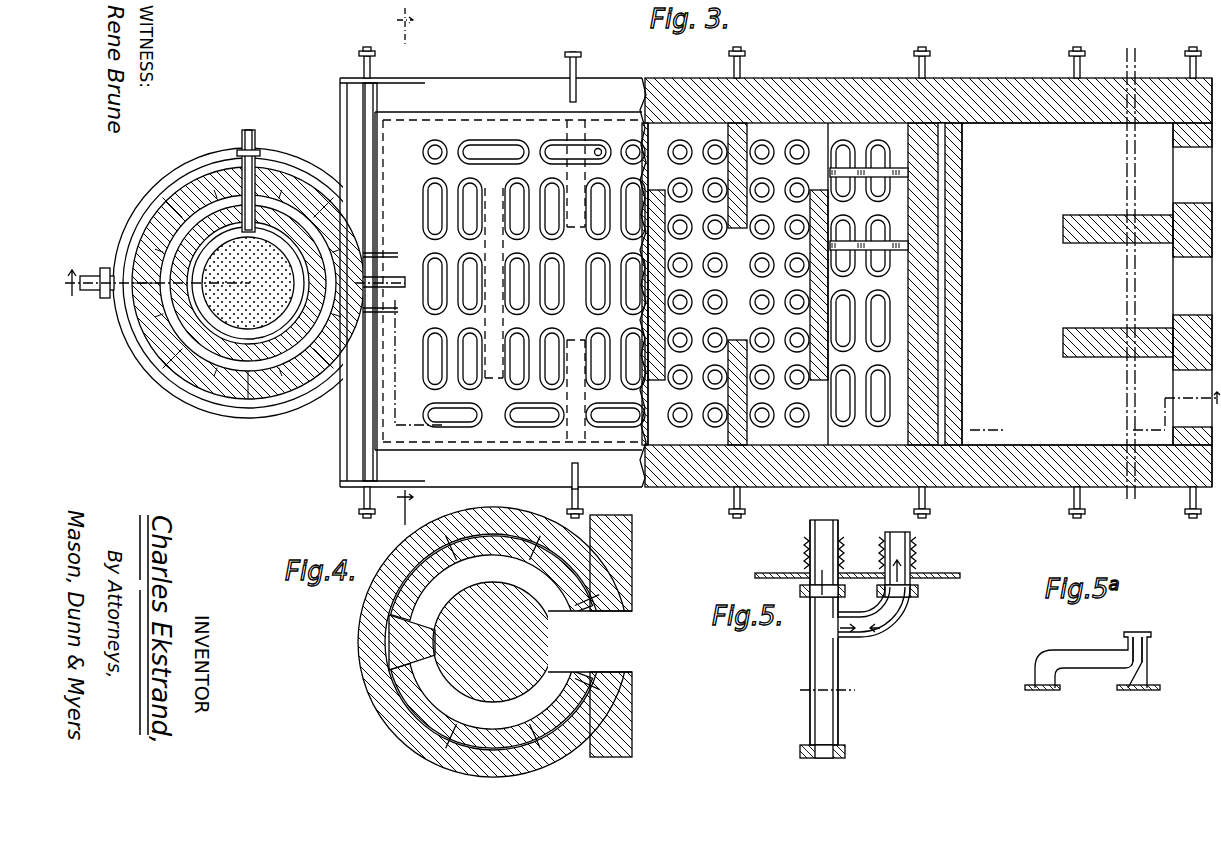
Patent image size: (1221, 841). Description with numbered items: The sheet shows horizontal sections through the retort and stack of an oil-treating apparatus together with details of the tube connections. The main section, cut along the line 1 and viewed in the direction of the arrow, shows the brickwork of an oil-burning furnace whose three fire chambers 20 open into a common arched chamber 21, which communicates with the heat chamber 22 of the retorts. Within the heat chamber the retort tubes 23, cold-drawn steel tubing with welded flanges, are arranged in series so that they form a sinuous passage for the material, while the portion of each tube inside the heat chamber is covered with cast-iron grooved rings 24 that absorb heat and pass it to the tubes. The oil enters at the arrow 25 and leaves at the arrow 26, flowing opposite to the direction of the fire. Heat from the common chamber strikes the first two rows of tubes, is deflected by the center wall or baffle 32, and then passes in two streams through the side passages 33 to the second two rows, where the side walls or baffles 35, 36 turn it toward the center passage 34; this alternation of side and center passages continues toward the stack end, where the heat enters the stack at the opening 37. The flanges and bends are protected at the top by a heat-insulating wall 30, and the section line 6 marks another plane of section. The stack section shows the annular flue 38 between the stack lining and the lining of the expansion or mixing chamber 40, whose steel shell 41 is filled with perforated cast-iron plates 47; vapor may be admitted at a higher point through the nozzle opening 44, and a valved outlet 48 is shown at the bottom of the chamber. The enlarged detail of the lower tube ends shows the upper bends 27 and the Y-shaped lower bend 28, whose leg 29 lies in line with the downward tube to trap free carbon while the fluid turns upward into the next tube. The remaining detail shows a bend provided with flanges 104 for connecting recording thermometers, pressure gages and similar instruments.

In FIG. 3, the section line 1- 1 is at (69, 293).
In FIG. 3, the section line 6- 6 is at (405, 266).
In FIG. 3, the furnace or fire chambers 20 is at (1137, 282).
In FIG. 3, the common arched chamber 21 is at (1067, 284).
In FIG. 3, the heat chamber 22 is at (792, 80).
In FIG. 3, the retort tubes 23 is at (714, 152).
In FIG. 5, the retort tubes 23 is at (892, 532).
In FIG. 3, the cast-iron grooved rings 24 is at (700, 388).
In FIG. 5, the cast-iron grooved rings 24 is at (912, 546).
In FIG. 3, the entrance arrow 25 is at (435, 152).
In FIG. 3, the exit arrow 26 is at (893, 143).
In FIG. 3, the upper bends 27 is at (494, 152).
In FIG. 5A, the upper bends 27 is at (1092, 672).
In FIG. 3, the lower bend 28 is at (882, 360).
In FIG. 5, the lower bend 28 is at (865, 640).
In FIG. 5, the leg of the Y 29 is at (810, 657).
In FIG. 3, the heat-insulating wall 30 is at (518, 248).
In FIG. 3, the center wall or baffle 32 is at (810, 282).
In FIG. 3, the side passages 33 is at (822, 132).
In FIG. 3, the center passage 34 is at (697, 285).
In FIG. 3, the side wall or baffle 35 is at (740, 143).
In FIG. 3, the side wall or baffle 36 is at (733, 425).
In FIG. 4, the stack opening 37 is at (590, 636).
In FIG. 3, the annular flue 38 is at (205, 225).
In FIG. 4, the annular flue 38 is at (493, 642).
In FIG. 3, the expansion or mixing chamber 40 is at (232, 302).
In FIG. 3, the steel shell 41 is at (285, 312).
In FIG. 3, the nozzle opening 44 is at (252, 172).
In FIG. 3, the perforated cast-iron plates 47 is at (197, 328).
In FIG. 3, the valved outlet 48 is at (120, 262).
In FIG. 3, the flanges 104 is at (600, 148).
In FIG. 5A, the flanges 104 is at (1149, 650).